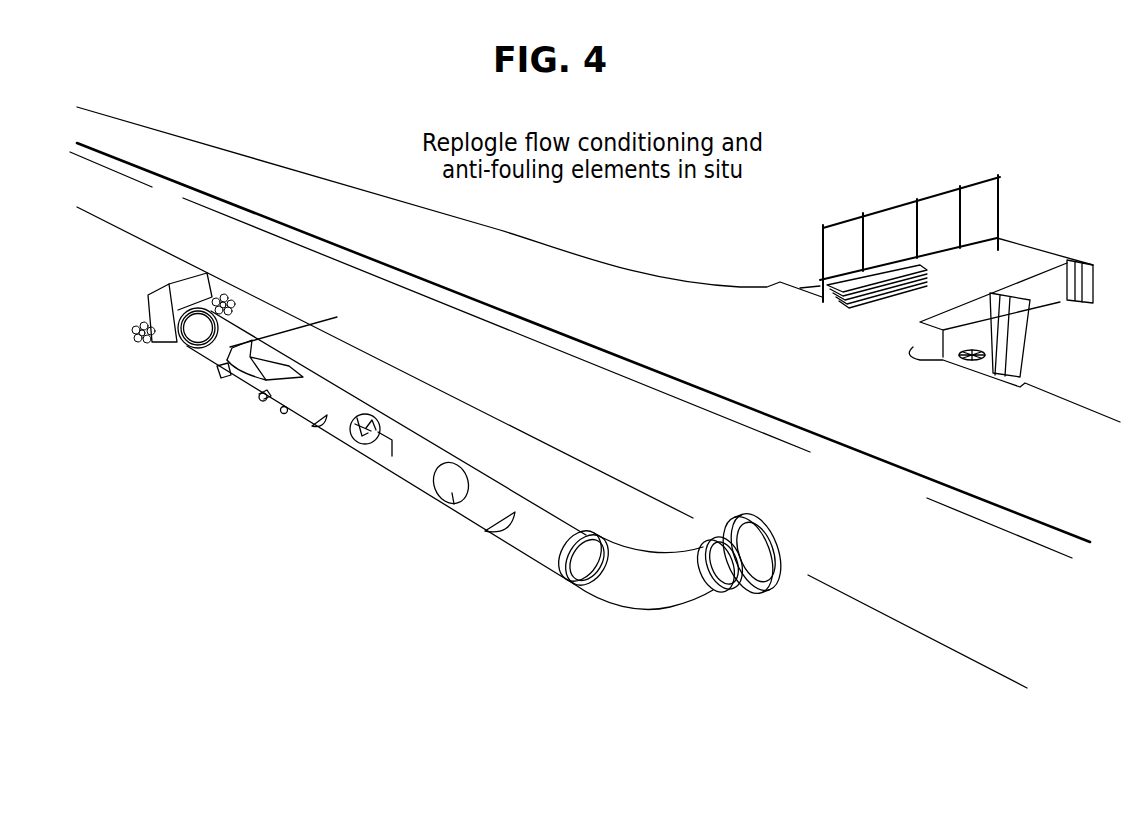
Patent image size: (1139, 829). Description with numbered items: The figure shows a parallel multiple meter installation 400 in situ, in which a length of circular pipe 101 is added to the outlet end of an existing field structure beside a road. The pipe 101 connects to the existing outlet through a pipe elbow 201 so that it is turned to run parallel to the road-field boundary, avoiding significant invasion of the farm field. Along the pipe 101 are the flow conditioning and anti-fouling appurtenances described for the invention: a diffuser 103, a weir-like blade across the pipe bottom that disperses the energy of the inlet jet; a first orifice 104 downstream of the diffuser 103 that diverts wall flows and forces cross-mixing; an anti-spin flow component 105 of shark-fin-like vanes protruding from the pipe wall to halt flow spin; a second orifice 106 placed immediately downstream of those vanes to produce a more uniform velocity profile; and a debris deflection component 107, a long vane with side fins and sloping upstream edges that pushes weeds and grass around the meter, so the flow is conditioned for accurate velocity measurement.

The circular pipe 101 is at (532, 547).
The diffuser 103 is at (489, 531).
The first orifice 104 is at (320, 420).
The anti-spin flow component 105 is at (362, 412).
The second orifice 106 is at (260, 398).
The debris deflection component 107 is at (272, 367).
The pipe elbow 201 is at (286, 413).
The parallel multiple meter installation 400 is at (656, 655).